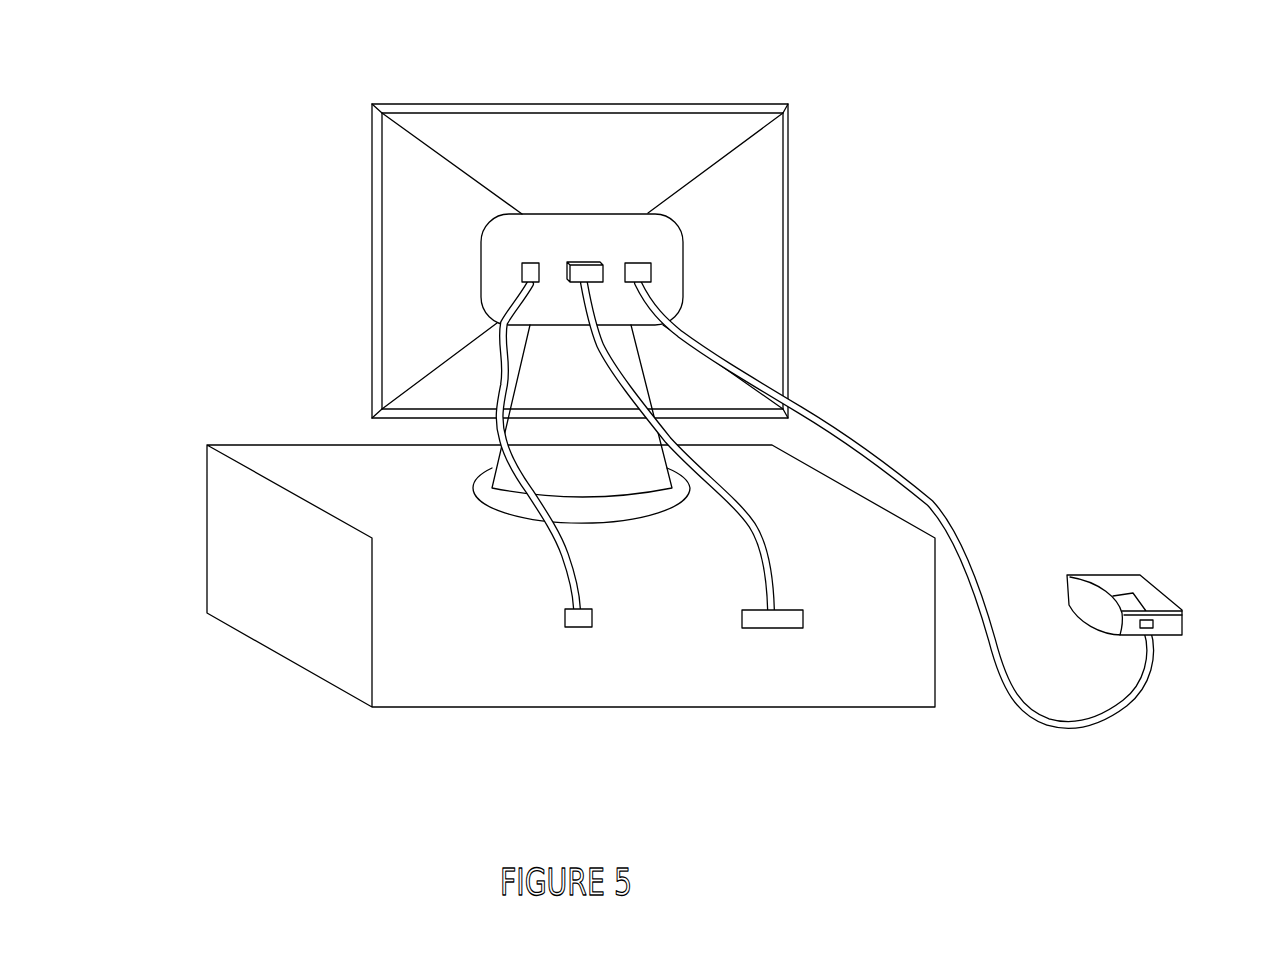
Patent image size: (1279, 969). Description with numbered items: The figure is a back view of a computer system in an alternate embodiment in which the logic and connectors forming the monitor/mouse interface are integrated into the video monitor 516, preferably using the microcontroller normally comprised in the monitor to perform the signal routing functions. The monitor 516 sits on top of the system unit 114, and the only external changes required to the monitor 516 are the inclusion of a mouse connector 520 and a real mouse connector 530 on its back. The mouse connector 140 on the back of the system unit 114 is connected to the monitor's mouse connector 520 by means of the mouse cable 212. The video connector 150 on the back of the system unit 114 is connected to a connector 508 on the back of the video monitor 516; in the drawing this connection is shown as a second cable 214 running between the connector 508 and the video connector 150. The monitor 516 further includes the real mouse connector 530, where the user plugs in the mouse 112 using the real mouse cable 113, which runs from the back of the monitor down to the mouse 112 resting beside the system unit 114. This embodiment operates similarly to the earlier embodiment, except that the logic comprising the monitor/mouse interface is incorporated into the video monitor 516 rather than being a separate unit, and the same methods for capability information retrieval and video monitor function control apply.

The video monitor 516 is at (372, 268).
The mouse connector 520 is at (530, 263).
The connector 508 is at (592, 261).
The real mouse connector 530 is at (642, 262).
The mouse cable 212 is at (499, 440).
The cable 214 is at (760, 525).
The real mouse cable 113 is at (933, 502).
The mouse 112 is at (1150, 577).
The system unit 114 is at (237, 582).
The mouse connector 140 is at (577, 628).
The video connector 150 is at (770, 630).